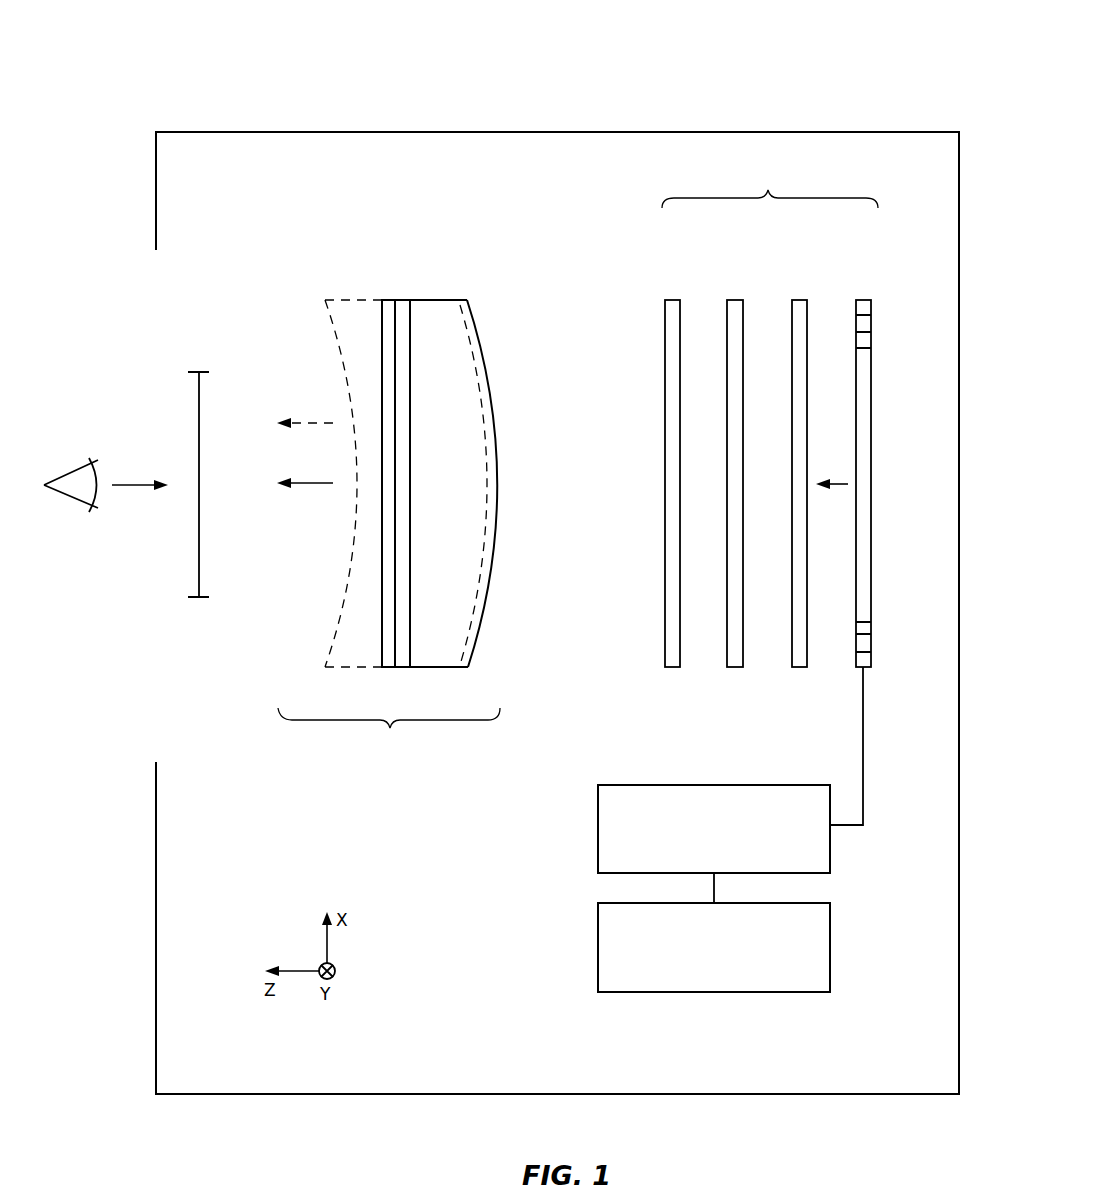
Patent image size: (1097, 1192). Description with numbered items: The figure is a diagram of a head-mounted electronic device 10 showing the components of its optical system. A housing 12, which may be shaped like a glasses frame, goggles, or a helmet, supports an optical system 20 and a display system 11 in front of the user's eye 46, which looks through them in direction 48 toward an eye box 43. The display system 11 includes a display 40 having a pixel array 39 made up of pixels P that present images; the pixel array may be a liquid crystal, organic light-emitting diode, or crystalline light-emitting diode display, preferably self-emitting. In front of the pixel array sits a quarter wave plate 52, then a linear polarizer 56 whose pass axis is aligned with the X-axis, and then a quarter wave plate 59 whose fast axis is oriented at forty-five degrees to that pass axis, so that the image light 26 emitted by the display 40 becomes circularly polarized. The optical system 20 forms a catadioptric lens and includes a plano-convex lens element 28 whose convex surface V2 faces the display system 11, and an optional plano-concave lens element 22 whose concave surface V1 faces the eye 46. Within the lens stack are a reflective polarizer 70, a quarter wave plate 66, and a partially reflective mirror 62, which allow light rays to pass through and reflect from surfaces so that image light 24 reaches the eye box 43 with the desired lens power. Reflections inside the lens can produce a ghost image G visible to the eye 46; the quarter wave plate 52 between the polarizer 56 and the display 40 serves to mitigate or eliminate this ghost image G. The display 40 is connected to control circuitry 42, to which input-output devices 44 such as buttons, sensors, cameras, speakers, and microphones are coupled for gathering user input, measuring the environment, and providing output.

The electronic device 10 is at (624, 62).
The housing 12 is at (388, 132).
The display system 11 is at (799, 416).
The optical system 20 is at (384, 500).
The lens element 22 is at (330, 308).
The image light 24 is at (303, 485).
The image light 26 is at (840, 486).
The lens element 28 is at (436, 300).
The pixel array 39 is at (865, 300).
The display 40 is at (890, 324).
The control circuitry 42 is at (598, 825).
The eye box 43 is at (199, 388).
The input-output devices 44 is at (598, 945).
The eye 46 is at (68, 471).
The direction 48 is at (135, 487).
The quarter wave plate 52 is at (801, 300).
The linear polarizer 56 is at (736, 300).
The quarter wave plate 59 is at (672, 300).
The partially reflective mirror 62 is at (467, 300).
The quarter wave plate 66 is at (403, 300).
The reflective polarizer 70 is at (390, 300).
The ghost image G is at (304, 423).
The pixels P is at (871, 645).
The concave surface V1 is at (334, 640).
The convex surface V2 is at (465, 642).